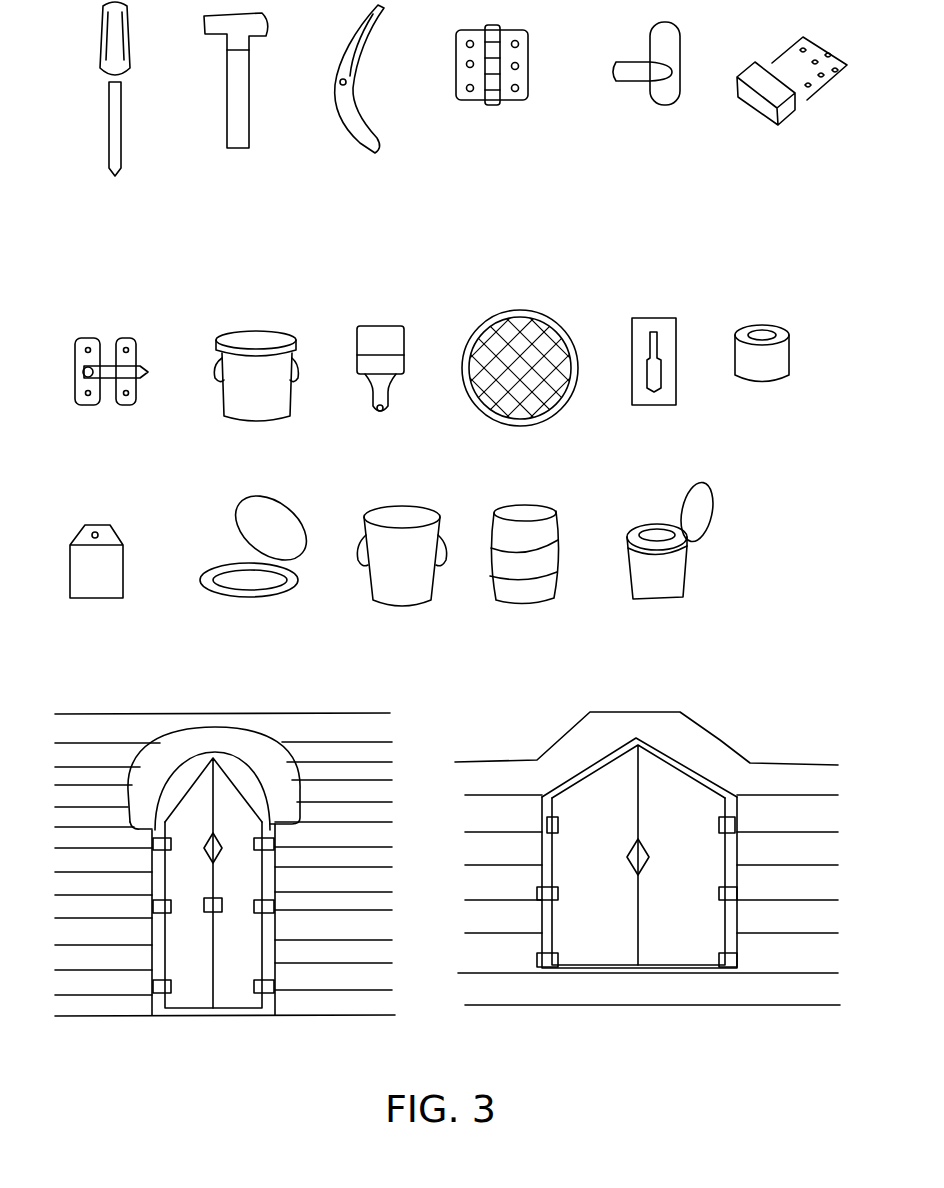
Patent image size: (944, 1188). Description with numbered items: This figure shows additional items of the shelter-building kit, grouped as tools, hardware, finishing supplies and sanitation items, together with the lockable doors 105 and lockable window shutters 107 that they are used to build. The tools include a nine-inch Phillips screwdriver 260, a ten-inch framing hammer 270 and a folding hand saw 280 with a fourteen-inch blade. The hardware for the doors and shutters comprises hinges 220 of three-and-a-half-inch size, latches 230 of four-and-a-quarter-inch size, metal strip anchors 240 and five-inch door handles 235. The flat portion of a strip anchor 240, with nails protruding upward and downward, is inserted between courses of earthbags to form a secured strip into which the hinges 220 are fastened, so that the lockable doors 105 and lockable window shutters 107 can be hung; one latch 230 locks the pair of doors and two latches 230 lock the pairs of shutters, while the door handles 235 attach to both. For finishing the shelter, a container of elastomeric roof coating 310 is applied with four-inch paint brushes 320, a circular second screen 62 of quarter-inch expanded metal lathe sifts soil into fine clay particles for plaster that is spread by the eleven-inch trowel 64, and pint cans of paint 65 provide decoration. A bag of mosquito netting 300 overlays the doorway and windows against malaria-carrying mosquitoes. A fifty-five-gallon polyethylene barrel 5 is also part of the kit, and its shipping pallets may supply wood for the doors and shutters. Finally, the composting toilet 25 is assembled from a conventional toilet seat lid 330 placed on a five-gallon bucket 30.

The screwdriver 260 is at (112, 138).
The hammer 270 is at (232, 125).
The saw 280 is at (363, 135).
The hinges 220 is at (476, 95).
The door handles 235 is at (660, 95).
The strip anchors 240 is at (770, 105).
The latches 230 is at (78, 388).
The roof coating 310 is at (235, 405).
The paint brushes 320 is at (375, 390).
The second screen 62 is at (475, 405).
The trowel 64 is at (636, 390).
The paint 65 is at (750, 370).
The mosquito netting 300 is at (77, 578).
The toilet seat lid 330 is at (210, 590).
The bucket 30 is at (378, 578).
The barrel 5 is at (500, 570).
The composting toilet 25 is at (640, 585).
The lockable doors 105 is at (192, 990).
The lockable window shutters 107 is at (603, 952).